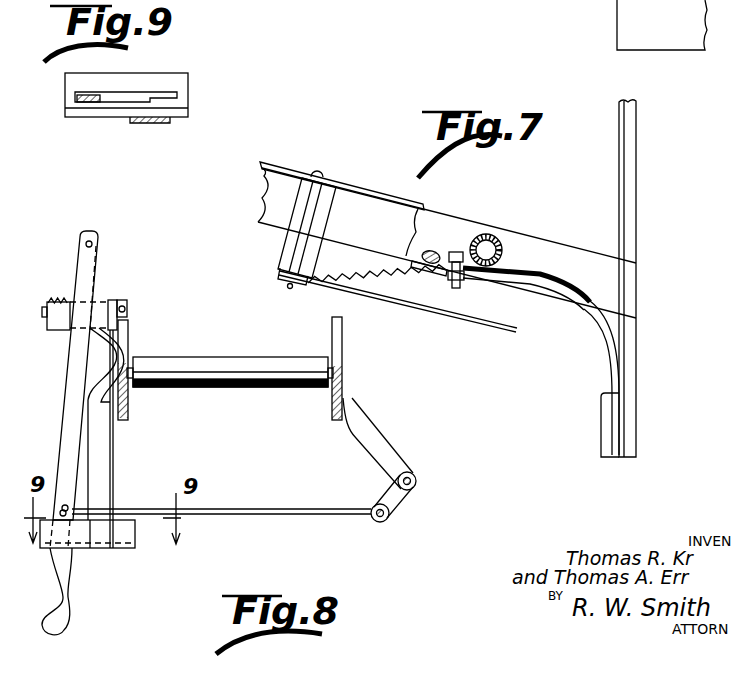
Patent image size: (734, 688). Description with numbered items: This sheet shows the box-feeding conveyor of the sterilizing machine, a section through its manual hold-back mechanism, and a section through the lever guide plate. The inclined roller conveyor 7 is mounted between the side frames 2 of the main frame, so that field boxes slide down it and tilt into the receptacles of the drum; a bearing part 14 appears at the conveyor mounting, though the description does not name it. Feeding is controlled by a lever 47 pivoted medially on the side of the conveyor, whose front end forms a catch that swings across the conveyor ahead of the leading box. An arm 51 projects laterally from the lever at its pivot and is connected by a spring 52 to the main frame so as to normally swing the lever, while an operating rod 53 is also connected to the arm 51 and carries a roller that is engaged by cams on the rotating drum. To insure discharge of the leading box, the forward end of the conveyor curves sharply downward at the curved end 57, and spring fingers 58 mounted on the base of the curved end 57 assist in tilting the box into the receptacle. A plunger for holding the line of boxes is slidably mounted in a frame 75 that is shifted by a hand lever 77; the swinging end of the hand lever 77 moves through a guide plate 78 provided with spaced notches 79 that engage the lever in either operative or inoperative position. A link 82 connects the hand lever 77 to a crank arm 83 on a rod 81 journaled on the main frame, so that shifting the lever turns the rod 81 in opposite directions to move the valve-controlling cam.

In FIG. 7, the side frames 2 is at (627, 158).
In FIG. 7, the inclined roller conveyor 7 is at (460, 232).
In FIG. 8, the inclined roller conveyor 7 is at (212, 370).
In FIG. 8, the bearing 14 is at (122, 302).
In FIG. 7, the lever 47 is at (398, 176).
In FIG. 7, the arm 51 is at (278, 284).
In FIG. 7, the spring 52 is at (368, 258).
In FIG. 7, the operating rod 53 is at (440, 310).
In FIG. 7, the curved end 57 is at (587, 318).
In FIG. 7, the spring fingers 58 is at (597, 290).
In FIG. 8, the frame 75 is at (49, 331).
In FIG. 9, the hand lever 77 is at (110, 57).
In FIG. 8, the hand lever 77 is at (74, 380).
In FIG. 9, the guide plate 78 is at (136, 82).
In FIG. 8, the guide plate 78 is at (120, 549).
In FIG. 9, the notches 79 is at (165, 96).
In FIG. 8, the rod 81 is at (413, 477).
In FIG. 8, the link 82 is at (272, 490).
In FIG. 8, the crank arm 83 is at (399, 498).